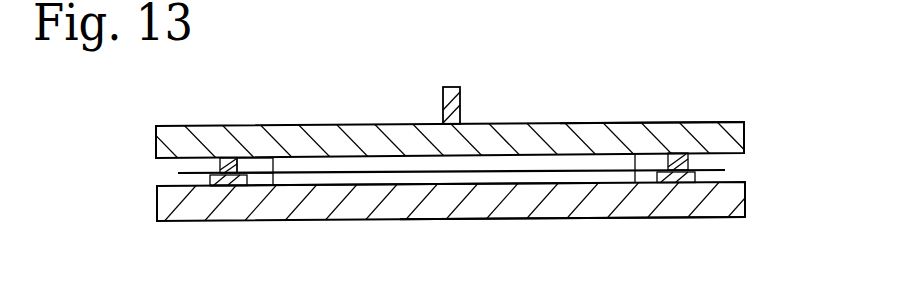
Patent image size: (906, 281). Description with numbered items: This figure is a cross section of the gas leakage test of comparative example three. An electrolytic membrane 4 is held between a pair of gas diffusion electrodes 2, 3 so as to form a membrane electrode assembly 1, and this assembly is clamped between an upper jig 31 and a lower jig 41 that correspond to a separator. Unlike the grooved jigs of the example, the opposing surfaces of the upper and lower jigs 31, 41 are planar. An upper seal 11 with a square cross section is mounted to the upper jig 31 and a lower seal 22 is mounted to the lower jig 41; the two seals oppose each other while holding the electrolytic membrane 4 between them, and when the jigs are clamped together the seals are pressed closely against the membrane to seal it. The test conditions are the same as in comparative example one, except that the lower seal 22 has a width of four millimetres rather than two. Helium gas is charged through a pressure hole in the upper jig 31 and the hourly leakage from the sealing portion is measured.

The membrane electrode assembly 1 is at (316, 156).
The upper seal 11 is at (216, 160).
The gas diffusion electrode 2 is at (492, 165).
The lower seal 22 is at (212, 178).
The gas diffusion electrode 3 is at (353, 184).
The upper jig 31 is at (587, 122).
The electrolytic membrane 4 is at (478, 172).
The lower jig 41 is at (520, 217).